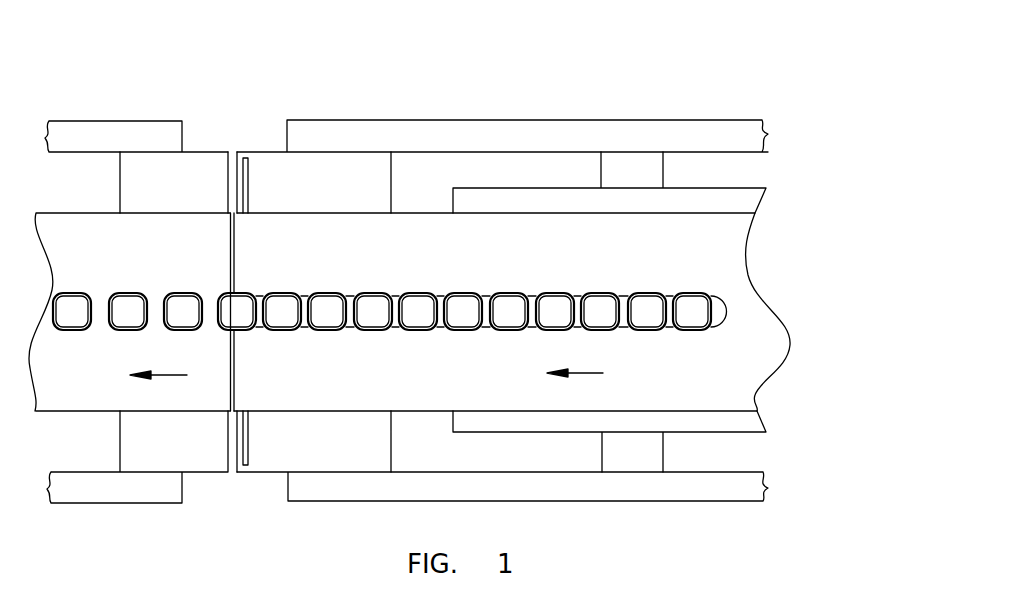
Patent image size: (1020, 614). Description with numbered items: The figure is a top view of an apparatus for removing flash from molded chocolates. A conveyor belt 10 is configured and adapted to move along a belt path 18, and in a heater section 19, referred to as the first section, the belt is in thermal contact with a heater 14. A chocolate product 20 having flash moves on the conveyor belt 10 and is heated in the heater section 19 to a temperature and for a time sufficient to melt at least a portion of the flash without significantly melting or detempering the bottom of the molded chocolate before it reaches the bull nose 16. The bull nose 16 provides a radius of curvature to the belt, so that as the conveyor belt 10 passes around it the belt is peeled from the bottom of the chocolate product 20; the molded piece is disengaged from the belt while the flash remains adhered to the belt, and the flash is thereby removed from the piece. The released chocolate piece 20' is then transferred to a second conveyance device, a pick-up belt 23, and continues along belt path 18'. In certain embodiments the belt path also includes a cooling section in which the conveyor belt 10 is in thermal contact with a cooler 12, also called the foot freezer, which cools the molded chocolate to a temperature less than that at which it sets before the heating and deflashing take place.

The conveyor belt 10 is at (412, 212).
The cooler 12 is at (568, 188).
The heater 14 is at (262, 152).
The bull nose 16 is at (236, 446).
The belt path 18 is at (596, 474).
The belt path 18' is at (142, 477).
The heater section 19 is at (411, 48).
The chocolate product 20 is at (472, 287).
The released chocolate piece 20' is at (127, 282).
The pick-up belt 23 is at (80, 213).